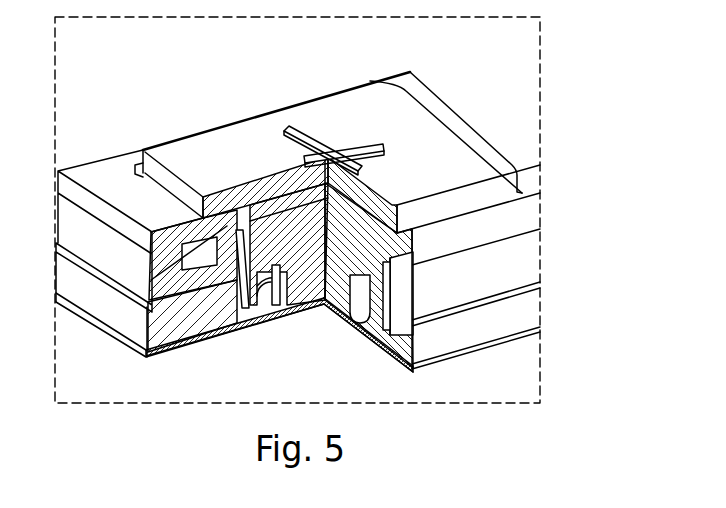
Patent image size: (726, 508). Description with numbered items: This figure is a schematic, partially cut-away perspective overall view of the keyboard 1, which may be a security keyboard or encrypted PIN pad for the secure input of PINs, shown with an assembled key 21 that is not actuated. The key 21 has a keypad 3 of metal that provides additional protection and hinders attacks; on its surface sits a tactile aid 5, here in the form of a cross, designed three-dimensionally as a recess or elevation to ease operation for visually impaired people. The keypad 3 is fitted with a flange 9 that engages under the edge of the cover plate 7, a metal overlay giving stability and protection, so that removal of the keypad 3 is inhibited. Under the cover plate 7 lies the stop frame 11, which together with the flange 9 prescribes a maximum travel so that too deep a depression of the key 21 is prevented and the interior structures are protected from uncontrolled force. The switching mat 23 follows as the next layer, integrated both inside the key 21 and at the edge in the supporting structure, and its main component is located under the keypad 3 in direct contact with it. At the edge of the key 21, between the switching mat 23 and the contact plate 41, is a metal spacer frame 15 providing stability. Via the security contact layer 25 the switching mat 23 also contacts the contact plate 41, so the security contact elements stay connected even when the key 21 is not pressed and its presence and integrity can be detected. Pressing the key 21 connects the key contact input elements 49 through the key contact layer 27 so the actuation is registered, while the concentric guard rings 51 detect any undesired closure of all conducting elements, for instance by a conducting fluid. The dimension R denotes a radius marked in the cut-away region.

The keyboard 1 is at (520, 62).
The keypad 3 is at (450, 144).
The tactile aid 5 is at (296, 133).
The cover plate 7 is at (500, 143).
The flange 9 is at (164, 221).
The stop frame 11 is at (155, 283).
The spacer frame 15 is at (535, 312).
The key 21 is at (555, 204).
The switching mat 23 is at (540, 283).
The security contact layer 25 is at (303, 318).
The key contact layer 27 is at (243, 325).
The contact plate 41 is at (540, 331).
The key contact input element 49 is at (373, 332).
The guard ring 51 is at (268, 324).
The radius R is at (184, 199).